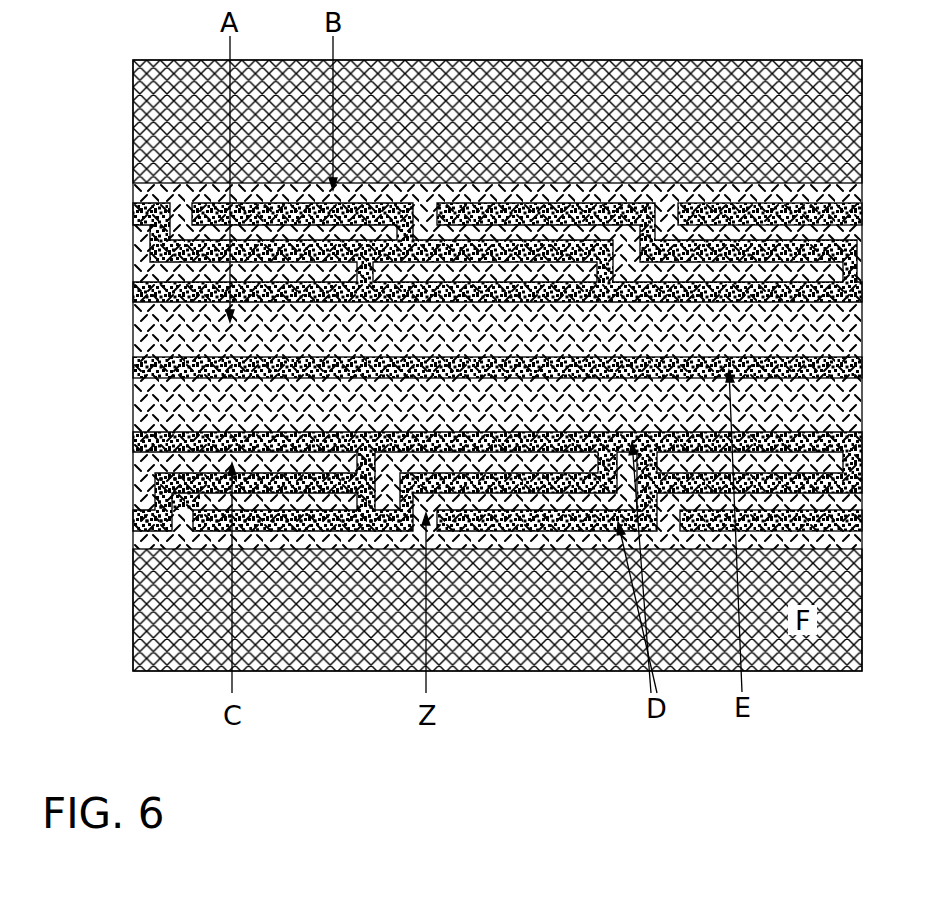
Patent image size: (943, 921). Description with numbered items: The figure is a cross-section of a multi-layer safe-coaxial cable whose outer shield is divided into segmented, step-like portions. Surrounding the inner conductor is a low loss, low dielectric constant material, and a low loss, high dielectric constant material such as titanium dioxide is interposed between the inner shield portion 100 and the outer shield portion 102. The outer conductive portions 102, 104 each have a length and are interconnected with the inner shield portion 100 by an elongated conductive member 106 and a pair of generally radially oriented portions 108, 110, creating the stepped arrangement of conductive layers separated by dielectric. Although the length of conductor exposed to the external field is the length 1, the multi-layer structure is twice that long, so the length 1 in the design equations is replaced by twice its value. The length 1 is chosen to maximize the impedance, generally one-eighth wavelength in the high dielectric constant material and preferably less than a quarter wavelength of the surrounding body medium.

The length 1 is at (657, 170).
The inner shield portion 100 is at (135, 448).
The outer shield portion 102 is at (137, 522).
The outer conductive portion 104 is at (210, 526).
The elongated conductive member 106 is at (193, 490).
The radially oriented portion 108 is at (376, 464).
The radially oriented portion 110 is at (157, 492).